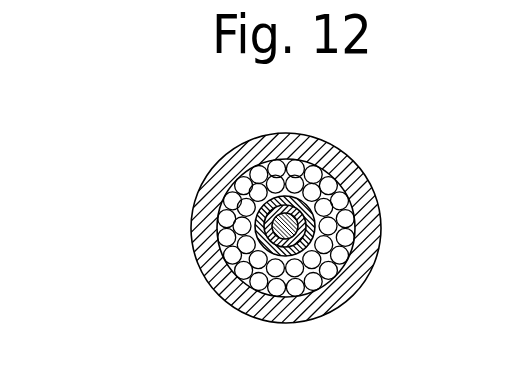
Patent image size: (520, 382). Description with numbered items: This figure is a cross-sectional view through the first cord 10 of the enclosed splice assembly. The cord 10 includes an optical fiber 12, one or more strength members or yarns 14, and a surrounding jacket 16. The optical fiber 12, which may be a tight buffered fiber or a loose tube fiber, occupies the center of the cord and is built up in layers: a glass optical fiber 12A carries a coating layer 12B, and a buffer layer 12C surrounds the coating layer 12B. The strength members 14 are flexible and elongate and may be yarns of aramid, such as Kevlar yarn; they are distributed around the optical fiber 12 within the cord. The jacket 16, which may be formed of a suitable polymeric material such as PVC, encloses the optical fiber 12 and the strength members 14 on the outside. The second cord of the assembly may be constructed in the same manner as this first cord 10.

The cord 10 is at (368, 98).
The optical fiber 12 is at (284, 175).
The glass optical fiber 12A is at (323, 195).
The coating layer 12B is at (299, 192).
The buffer layer 12C is at (252, 210).
The strength members 14 is at (335, 272).
The jacket 16 is at (373, 193).